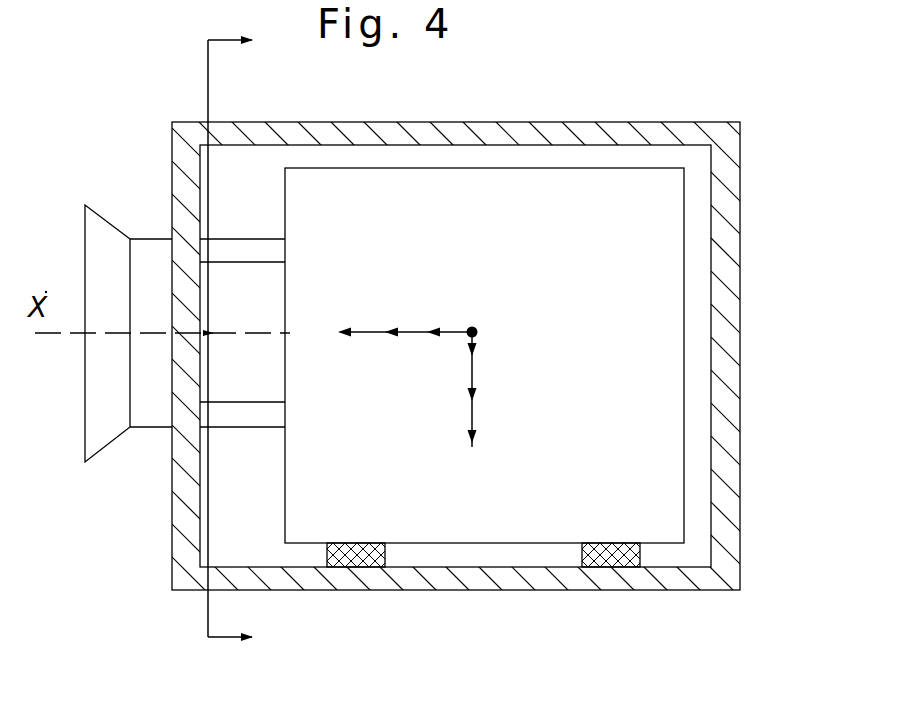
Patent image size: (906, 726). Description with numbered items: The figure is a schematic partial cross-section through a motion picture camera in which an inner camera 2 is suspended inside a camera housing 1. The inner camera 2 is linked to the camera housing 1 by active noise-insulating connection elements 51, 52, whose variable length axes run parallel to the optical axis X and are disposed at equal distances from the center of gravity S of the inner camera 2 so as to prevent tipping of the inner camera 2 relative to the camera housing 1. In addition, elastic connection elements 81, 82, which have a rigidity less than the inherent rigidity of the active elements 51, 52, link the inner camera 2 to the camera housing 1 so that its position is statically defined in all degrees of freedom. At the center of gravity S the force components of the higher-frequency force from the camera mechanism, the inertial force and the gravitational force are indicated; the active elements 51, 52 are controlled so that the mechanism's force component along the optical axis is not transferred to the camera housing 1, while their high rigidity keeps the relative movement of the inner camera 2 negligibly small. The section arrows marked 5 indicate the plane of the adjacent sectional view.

The camera housing 1 is at (268, 131).
The inner camera 2 is at (670, 263).
The active noise-insulating connection element 51 is at (262, 241).
The active noise-insulating connection element 52 is at (264, 416).
The additional elastic connection element 81 is at (353, 567).
The additional elastic connection element 82 is at (610, 560).
The section line 5- 5 is at (245, 341).
The center of gravity S is at (482, 322).